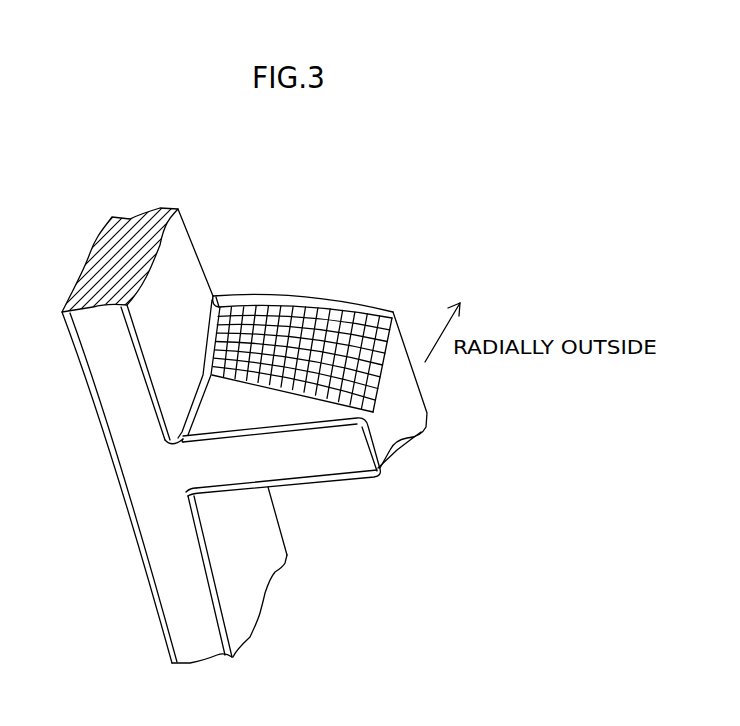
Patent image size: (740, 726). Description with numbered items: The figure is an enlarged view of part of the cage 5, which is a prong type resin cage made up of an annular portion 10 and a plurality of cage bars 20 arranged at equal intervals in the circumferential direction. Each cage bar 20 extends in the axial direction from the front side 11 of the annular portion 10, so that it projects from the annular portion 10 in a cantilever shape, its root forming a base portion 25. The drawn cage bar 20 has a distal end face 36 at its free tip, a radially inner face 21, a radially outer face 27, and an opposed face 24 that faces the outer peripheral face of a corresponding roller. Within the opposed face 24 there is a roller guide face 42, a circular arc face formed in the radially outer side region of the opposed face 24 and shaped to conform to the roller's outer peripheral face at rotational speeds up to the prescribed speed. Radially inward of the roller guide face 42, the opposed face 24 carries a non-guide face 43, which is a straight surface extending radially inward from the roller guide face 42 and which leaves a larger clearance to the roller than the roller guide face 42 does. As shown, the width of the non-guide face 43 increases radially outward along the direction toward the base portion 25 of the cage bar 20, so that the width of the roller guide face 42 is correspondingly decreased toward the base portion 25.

The cage 5 is at (191, 431).
The annular portion 10 is at (277, 575).
The front side 11 is at (262, 522).
The cage bar 20 is at (340, 326).
The radially inner face 21 is at (345, 463).
The opposed face 24 is at (301, 298).
The base portion 25 is at (205, 457).
The radially outer face 27 is at (335, 300).
The distal end face 36 is at (413, 413).
The roller guide face 42 is at (332, 357).
The non-guide face 43 is at (248, 410).